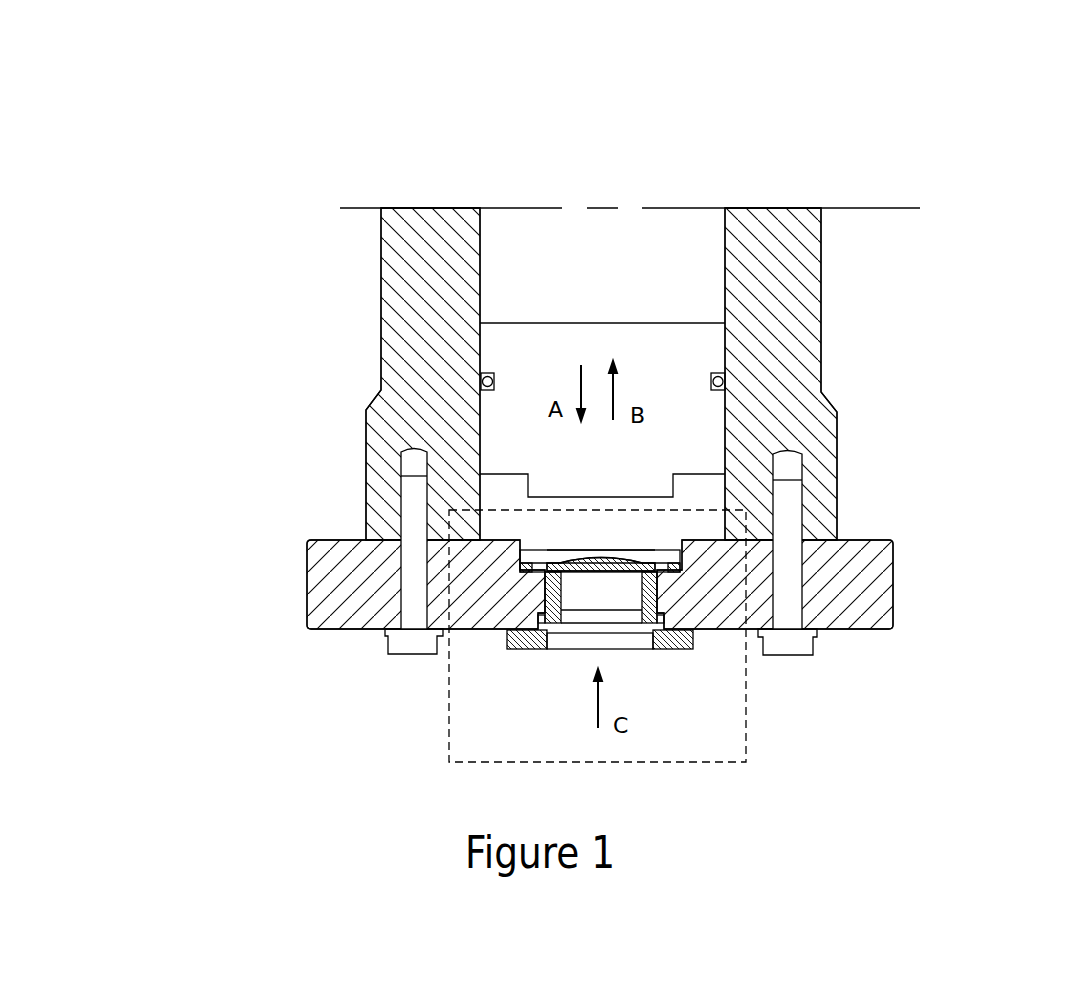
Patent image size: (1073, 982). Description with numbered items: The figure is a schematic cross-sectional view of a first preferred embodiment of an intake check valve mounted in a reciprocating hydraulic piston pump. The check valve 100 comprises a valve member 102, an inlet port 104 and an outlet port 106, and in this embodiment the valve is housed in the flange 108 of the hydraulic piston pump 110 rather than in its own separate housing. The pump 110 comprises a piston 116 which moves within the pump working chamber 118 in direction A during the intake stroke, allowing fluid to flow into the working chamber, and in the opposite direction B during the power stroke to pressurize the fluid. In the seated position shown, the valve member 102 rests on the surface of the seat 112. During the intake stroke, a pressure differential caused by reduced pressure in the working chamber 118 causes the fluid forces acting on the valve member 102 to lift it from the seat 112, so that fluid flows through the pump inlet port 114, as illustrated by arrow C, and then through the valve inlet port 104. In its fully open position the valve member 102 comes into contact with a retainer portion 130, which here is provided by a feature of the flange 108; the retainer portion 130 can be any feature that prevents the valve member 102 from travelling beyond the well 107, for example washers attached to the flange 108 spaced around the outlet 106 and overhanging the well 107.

The check valve 100 is at (449, 677).
The valve member 102 is at (620, 561).
The inlet port 104 is at (613, 612).
The outlet port 106 is at (603, 550).
The well 107 is at (550, 557).
The flange 108 is at (342, 592).
The hydraulic piston pump 110 is at (821, 343).
The seat 112 is at (648, 592).
The pump inlet port 114 is at (560, 648).
The piston 116 is at (660, 366).
The pump working chamber 118 is at (608, 238).
The retainer portion 130 is at (672, 545).